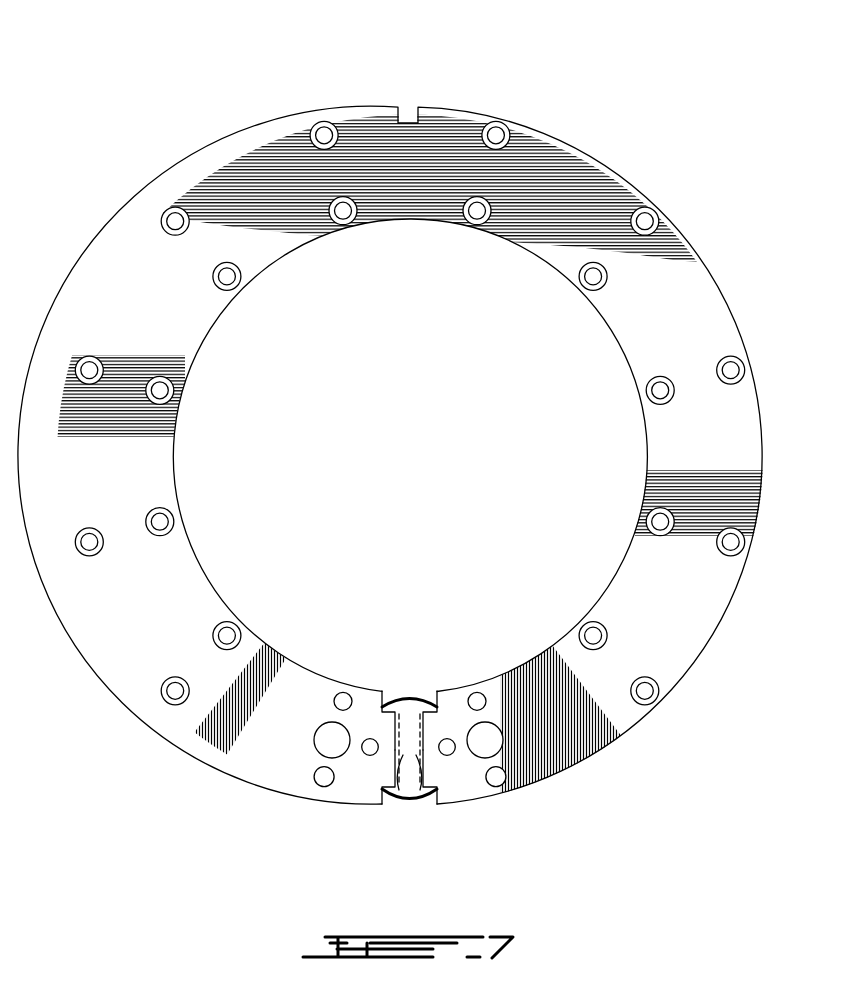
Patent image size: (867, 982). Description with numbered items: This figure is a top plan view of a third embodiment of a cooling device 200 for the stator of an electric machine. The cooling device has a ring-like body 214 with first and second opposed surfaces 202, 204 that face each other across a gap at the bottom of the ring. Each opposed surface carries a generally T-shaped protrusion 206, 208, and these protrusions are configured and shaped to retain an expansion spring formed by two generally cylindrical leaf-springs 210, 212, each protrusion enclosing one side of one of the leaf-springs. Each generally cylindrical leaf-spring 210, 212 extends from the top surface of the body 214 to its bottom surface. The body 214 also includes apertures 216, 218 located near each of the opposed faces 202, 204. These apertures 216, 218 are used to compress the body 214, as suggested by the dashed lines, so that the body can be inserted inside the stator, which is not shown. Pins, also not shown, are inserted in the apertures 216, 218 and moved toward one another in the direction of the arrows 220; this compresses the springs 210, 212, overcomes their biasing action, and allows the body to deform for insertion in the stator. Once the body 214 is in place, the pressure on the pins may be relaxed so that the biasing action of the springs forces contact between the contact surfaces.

The cooling device 200 is at (394, 456).
The body 214 is at (592, 150).
The first opposed surface 202 is at (386, 792).
The second opposed surface 204 is at (436, 793).
The generally T-shaped protrusion 206 is at (382, 712).
The generally T-shaped protrusion 208 is at (437, 710).
The generally cylindrical leaf-spring 210 is at (407, 803).
The generally cylindrical leaf-spring 212 is at (405, 693).
The aperture 216 is at (363, 739).
The aperture 218 is at (455, 741).
The arrows 220 is at (348, 747).